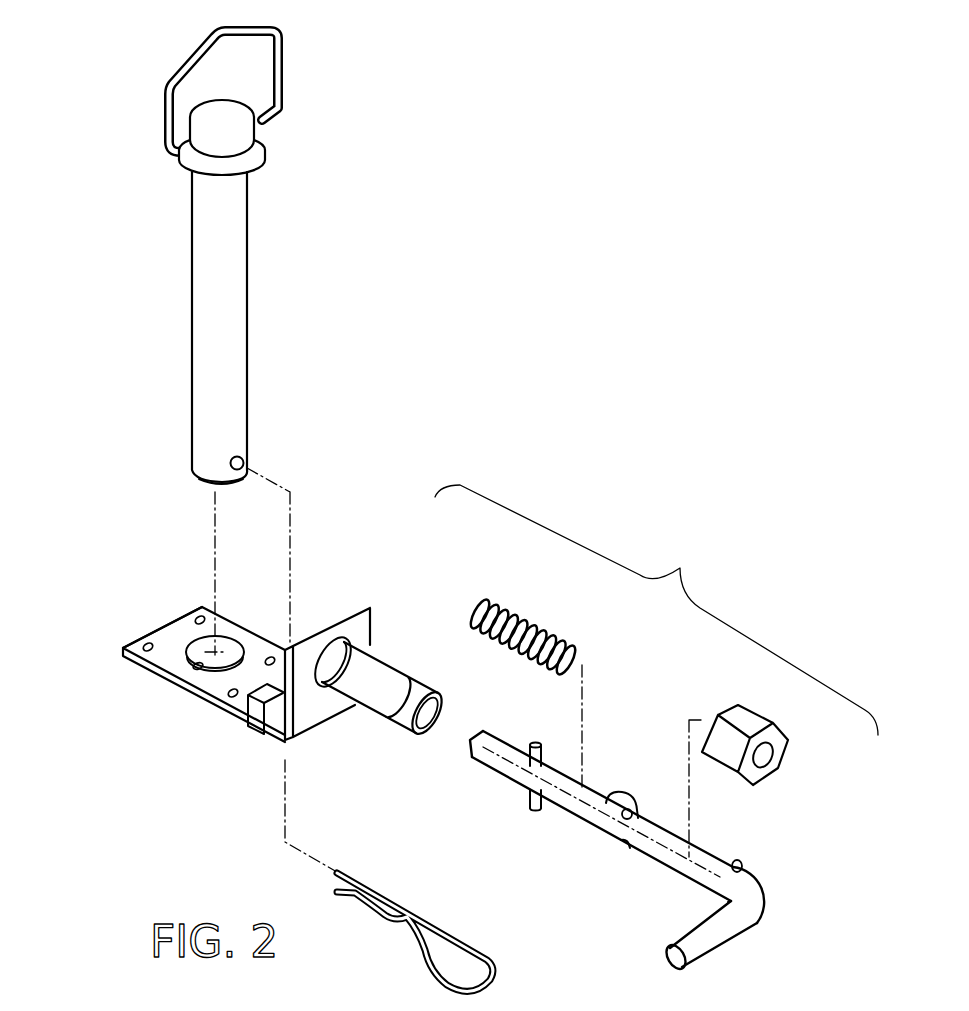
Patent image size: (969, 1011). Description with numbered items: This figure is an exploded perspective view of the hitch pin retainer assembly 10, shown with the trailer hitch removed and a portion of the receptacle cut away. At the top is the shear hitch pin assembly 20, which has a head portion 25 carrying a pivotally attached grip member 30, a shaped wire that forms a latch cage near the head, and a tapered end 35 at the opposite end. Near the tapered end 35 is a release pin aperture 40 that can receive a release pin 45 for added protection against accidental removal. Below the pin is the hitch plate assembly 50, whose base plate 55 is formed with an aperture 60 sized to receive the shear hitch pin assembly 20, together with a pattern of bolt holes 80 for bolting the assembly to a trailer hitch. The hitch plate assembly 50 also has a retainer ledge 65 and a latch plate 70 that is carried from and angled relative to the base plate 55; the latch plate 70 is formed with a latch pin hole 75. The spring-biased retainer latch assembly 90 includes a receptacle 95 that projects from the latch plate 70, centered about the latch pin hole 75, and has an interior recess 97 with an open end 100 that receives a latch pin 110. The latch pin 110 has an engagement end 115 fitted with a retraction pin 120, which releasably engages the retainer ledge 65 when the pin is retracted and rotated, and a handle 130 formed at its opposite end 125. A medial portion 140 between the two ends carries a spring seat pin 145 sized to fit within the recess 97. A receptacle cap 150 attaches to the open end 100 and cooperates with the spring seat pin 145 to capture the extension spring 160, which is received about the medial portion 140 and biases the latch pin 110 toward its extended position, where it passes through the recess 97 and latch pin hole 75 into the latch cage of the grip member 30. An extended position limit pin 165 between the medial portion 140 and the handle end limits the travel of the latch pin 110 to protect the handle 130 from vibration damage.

The hitch pin retainer assembly 10 is at (507, 390).
The shear hitch pin assembly 20 is at (255, 245).
The head portion 25 is at (258, 130).
The grip member 30 is at (283, 50).
The tapered end 35 is at (208, 483).
The release pin aperture 40 is at (240, 455).
The release pin 45 is at (492, 962).
The hitch plate assembly 50 is at (145, 677).
The base plate 55 is at (143, 638).
The aperture 60 is at (188, 666).
The retainer ledge 65 is at (248, 720).
The latch plate 70 is at (366, 612).
The latch pin hole 75 is at (343, 682).
The bolt hole 80 is at (197, 618).
The retainer latch assembly 90 is at (688, 565).
The receptacle 95 is at (382, 657).
The interior recess 97 is at (414, 740).
The open end 100 is at (446, 700).
The latch pin 110 is at (638, 760).
The engagement end 115 is at (470, 733).
The retraction pin 120 is at (538, 742).
The opposite end 125 is at (766, 915).
The handle 130 is at (740, 955).
The medial portion 140 is at (655, 860).
The spring seat pin 145 is at (622, 848).
The receptacle cap 150 is at (790, 756).
The extension spring 160 is at (565, 642).
The extended position limit pin 165 is at (740, 867).